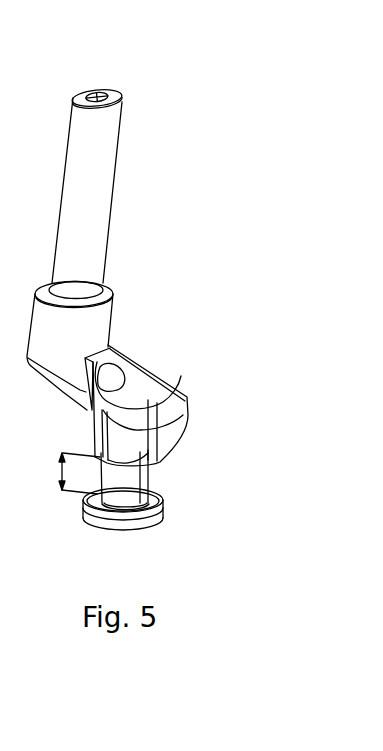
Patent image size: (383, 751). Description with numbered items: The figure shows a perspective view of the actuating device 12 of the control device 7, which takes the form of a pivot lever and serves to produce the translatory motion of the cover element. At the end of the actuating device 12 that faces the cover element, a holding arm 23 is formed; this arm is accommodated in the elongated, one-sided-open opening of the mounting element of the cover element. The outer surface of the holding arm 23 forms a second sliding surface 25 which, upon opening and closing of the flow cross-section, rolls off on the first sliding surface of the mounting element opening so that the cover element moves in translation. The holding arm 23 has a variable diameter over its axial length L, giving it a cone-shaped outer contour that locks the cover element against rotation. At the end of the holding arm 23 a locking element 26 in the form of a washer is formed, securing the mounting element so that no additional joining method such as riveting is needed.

The control device 7 is at (173, 137).
The actuating device 12 is at (115, 313).
The second sliding surface 25 is at (150, 480).
The holding arm 23 is at (122, 492).
The locking element 26 is at (157, 515).
The axial length L is at (62, 472).